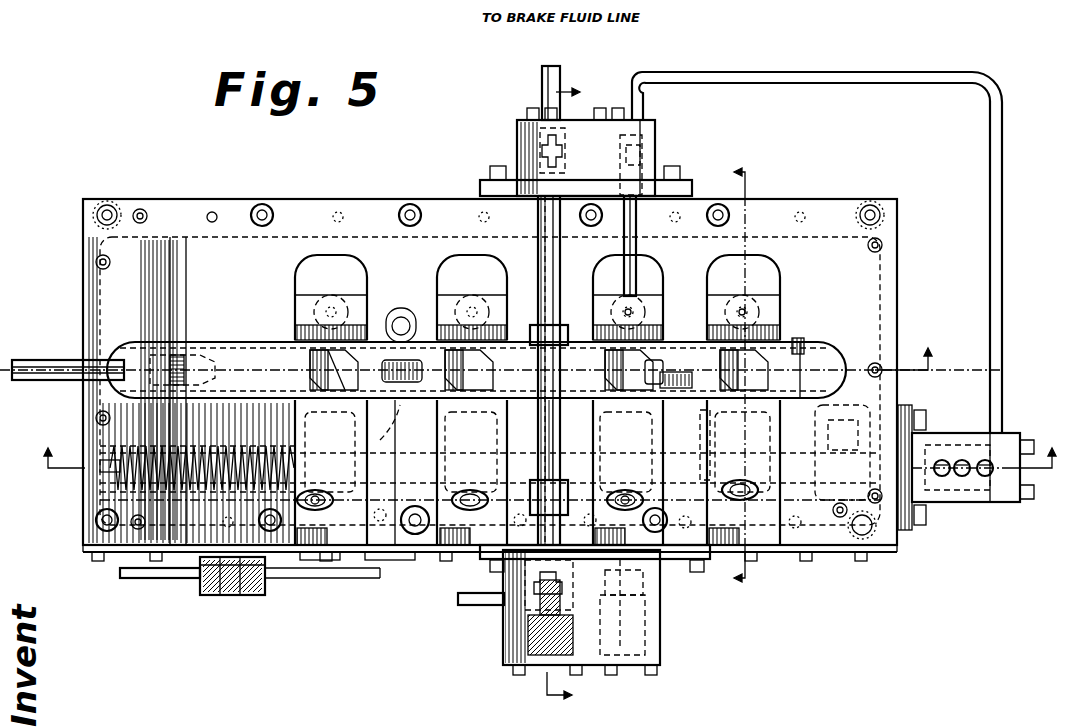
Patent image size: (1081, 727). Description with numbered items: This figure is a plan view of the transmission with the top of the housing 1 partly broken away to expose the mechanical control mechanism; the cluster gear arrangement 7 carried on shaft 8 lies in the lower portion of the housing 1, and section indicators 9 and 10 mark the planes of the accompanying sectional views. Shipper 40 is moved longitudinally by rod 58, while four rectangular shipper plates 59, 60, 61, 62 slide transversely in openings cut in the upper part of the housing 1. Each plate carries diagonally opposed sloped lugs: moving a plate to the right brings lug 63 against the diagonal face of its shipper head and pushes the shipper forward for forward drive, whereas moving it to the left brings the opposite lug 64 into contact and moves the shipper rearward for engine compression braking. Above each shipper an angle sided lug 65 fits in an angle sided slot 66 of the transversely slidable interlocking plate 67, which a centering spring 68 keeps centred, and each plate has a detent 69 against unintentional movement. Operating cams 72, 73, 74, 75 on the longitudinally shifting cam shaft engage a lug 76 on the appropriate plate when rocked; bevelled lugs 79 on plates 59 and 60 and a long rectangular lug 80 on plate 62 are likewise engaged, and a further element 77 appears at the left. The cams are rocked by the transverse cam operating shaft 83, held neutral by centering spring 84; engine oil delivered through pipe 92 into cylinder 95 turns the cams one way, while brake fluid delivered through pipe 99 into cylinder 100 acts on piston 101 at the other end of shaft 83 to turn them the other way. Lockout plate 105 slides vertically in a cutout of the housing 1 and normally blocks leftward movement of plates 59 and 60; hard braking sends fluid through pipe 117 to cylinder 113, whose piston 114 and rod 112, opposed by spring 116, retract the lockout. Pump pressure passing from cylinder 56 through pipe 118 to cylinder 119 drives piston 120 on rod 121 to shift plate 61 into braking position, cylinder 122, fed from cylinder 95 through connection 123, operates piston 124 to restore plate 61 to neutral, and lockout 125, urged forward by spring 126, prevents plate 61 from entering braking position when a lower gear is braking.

The housing 1 is at (125, 198).
The cluster gear arrangement 7 is at (904, 348).
The shaft 8 is at (549, 445).
The section line 9 is at (729, 376).
The section line 10 is at (579, 393).
The shipper 40 is at (205, 355).
The cylinder 56 is at (965, 502).
The rod 58 is at (32, 362).
The shipper plate 59 is at (331, 400).
The shipper plate 60 is at (470, 372).
The shipper plate 61 is at (628, 400).
The shipper plate 62 is at (760, 300).
The diagonal lug 63 is at (480, 432).
The diagonal lug 64 is at (402, 360).
The angle sided lug 65 is at (330, 372).
The angle sided slot 66 is at (760, 365).
The interlocking plate 67 is at (790, 380).
The centering spring 68 is at (398, 310).
The detent 69 is at (630, 312).
The operating cam 72 is at (330, 560).
The operating cam 73 is at (440, 565).
The operating cam 74 is at (680, 585).
The operating cam 75 is at (790, 548).
The lug 76 is at (455, 505).
The return spring 77 is at (302, 412).
The shipper plate lug 79 is at (325, 528).
The shipper plate lug 80 is at (770, 545).
The cam operating shaft 83 is at (545, 215).
The centering spring 84 is at (542, 262).
The pipe 92 is at (482, 605).
The cylinder 95 is at (505, 650).
The pipe 99 is at (542, 74).
The cylinder 100 is at (525, 165).
The piston 101 is at (530, 140).
The lockout plate 105 is at (420, 535).
The rod 112 is at (290, 578).
The cylinder 113 is at (228, 595).
The piston 114 is at (205, 595).
The spring 116 is at (240, 595).
The pipe 117 is at (135, 578).
The pipe 118 is at (990, 262).
The cylinder 119 is at (640, 130).
The piston 120 is at (640, 152).
The rod 121 is at (636, 165).
The cylinder 122 is at (665, 655).
The connection 123 is at (650, 672).
The piston 124 is at (655, 620).
The lockout 125 is at (675, 378).
The spring 126 is at (660, 372).